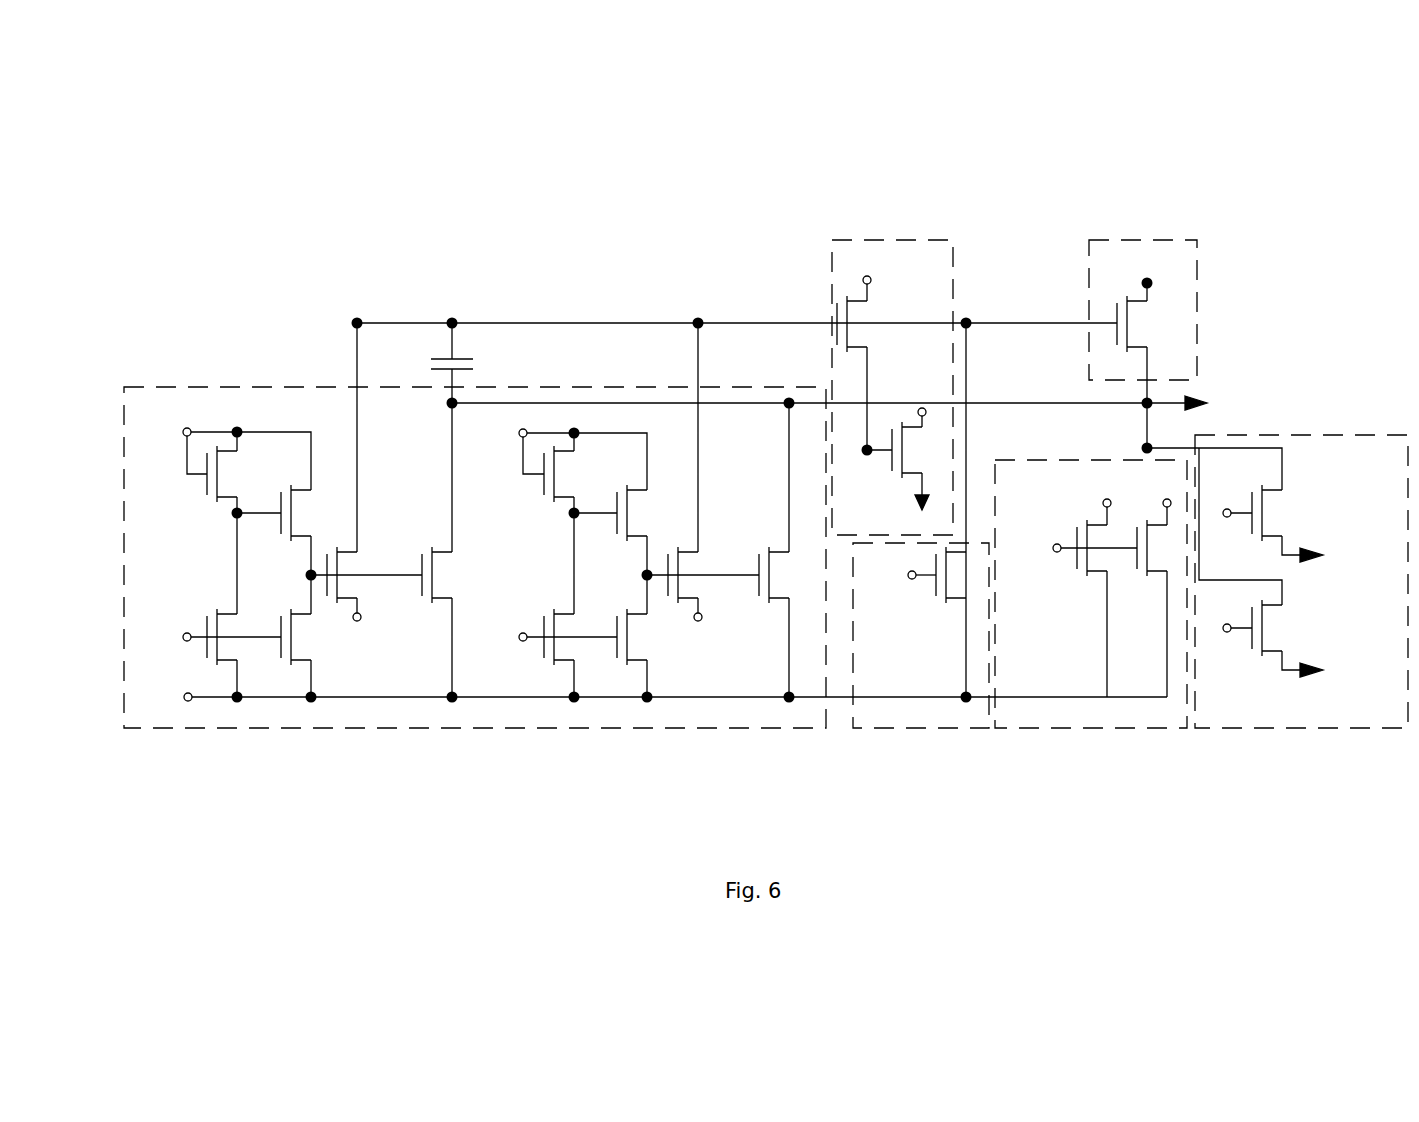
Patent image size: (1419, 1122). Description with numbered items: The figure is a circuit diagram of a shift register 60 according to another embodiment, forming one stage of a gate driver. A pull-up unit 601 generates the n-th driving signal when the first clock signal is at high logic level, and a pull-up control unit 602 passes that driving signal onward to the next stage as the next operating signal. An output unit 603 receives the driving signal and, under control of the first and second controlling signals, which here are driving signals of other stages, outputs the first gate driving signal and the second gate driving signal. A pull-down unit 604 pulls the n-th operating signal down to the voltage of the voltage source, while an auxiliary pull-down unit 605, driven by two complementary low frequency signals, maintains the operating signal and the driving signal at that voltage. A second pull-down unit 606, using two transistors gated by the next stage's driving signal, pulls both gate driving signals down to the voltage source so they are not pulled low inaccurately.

The shift register 60 is at (182, 190).
The pull-up unit 601 is at (1145, 240).
The pull-up control unit 602 is at (882, 240).
The output unit 603 is at (1290, 728).
The pull-down unit 604 is at (903, 728).
The auxiliary pull-down unit 605 is at (460, 728).
The second pull-down unit 606 is at (1113, 728).